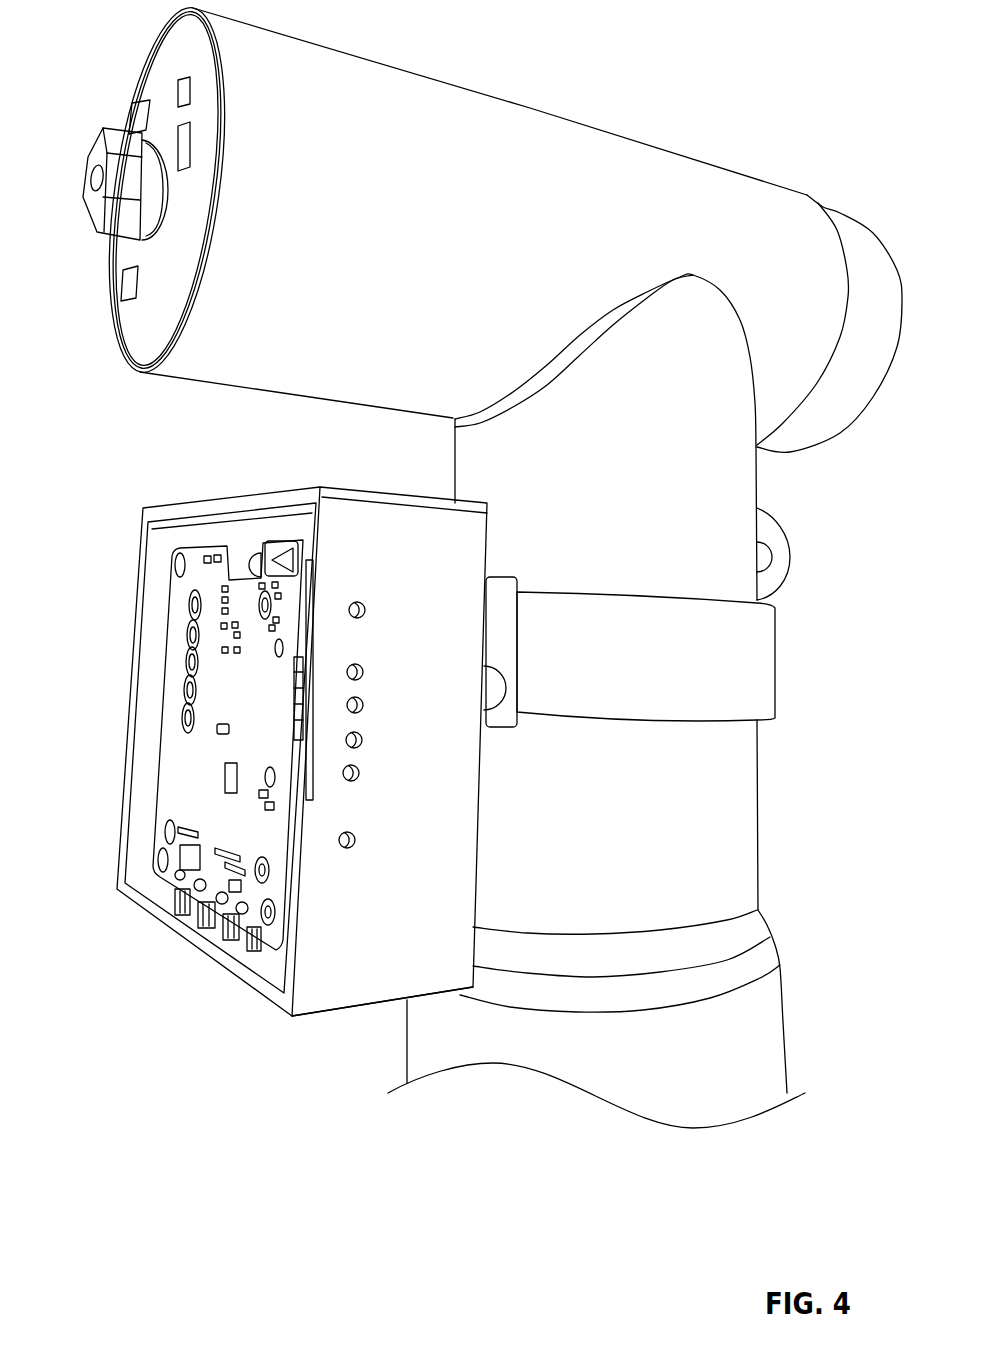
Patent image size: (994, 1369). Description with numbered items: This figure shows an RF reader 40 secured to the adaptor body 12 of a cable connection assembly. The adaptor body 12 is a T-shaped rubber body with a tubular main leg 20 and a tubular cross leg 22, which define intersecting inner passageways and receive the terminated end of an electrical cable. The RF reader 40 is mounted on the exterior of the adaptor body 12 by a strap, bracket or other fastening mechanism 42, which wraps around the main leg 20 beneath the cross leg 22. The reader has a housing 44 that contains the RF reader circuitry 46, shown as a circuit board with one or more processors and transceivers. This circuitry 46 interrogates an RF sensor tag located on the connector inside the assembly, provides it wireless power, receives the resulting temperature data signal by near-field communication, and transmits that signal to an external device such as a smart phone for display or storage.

The adaptor body 12 is at (656, 121).
The main leg 20 is at (770, 820).
The cross leg 22 is at (572, 104).
The RF reader 40 is at (185, 992).
The fastening mechanism 42 is at (757, 638).
The housing 44 is at (357, 993).
The RF reader circuitry 46 is at (200, 783).